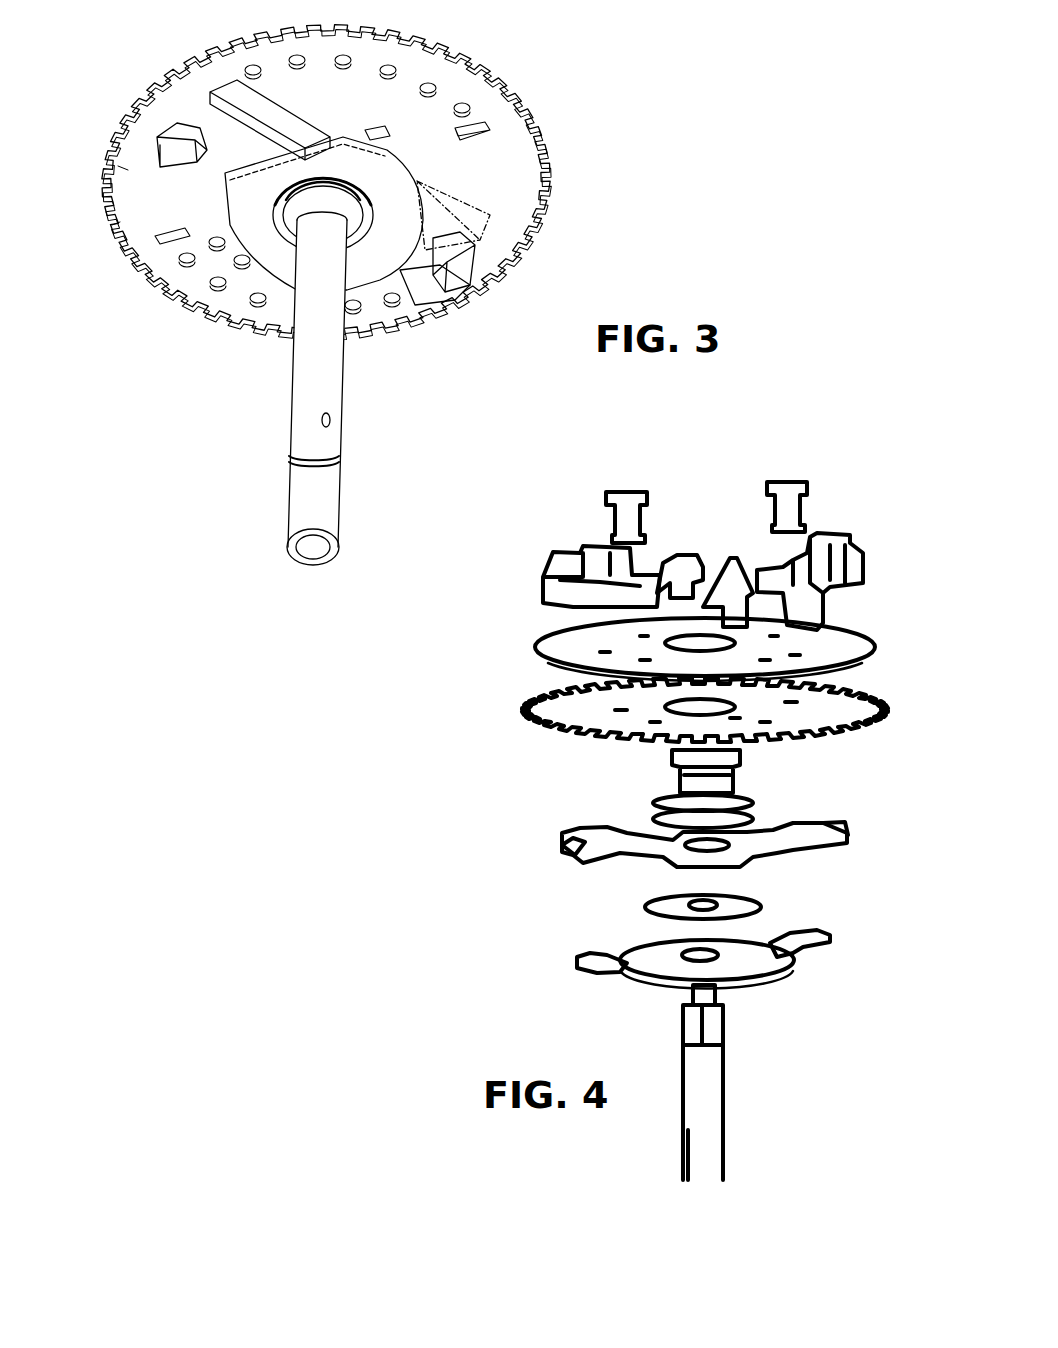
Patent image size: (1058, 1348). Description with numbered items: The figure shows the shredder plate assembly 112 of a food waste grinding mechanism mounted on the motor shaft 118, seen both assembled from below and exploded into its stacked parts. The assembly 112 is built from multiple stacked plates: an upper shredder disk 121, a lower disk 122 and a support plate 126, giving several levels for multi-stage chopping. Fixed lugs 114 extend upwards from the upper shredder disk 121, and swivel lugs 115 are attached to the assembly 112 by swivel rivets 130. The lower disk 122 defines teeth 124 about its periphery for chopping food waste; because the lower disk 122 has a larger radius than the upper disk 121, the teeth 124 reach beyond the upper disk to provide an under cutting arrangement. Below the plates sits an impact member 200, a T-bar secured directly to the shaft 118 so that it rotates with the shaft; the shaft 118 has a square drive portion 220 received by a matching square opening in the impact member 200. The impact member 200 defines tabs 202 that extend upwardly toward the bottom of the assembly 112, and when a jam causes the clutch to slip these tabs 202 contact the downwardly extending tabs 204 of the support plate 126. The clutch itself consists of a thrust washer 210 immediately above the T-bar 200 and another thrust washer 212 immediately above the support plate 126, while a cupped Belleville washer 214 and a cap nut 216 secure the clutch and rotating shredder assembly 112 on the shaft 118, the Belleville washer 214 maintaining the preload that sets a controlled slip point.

In FIG. 3, the shredder plate assembly 112 is at (148, 357).
In FIG. 4, the shredder plate assembly 112 is at (490, 833).
In FIG. 4, the fixed lugs 114 is at (597, 532).
In FIG. 4, the swivel lugs 115 is at (556, 555).
In FIG. 3, the motor shaft 118 is at (302, 386).
In FIG. 4, the motor shaft 118 is at (682, 1071).
In FIG. 4, the upper shredder disk 121 is at (538, 641).
In FIG. 3, the lower disk 122 is at (372, 323).
In FIG. 4, the lower disk 122 is at (832, 718).
In FIG. 3, the teeth 124 is at (125, 242).
In FIG. 4, the teeth 124 is at (555, 725).
In FIG. 3, the support plate 126 is at (487, 213).
In FIG. 4, the support plate 126 is at (772, 860).
In FIG. 4, the swivel rivets 130 is at (614, 495).
In FIG. 3, the impact member 200 is at (230, 200).
In FIG. 4, the impact member 200 is at (660, 985).
In FIG. 3, the tabs 202 is at (217, 125).
In FIG. 4, the tabs 202 is at (575, 955).
In FIG. 3, the downwardly extending tabs 204 is at (190, 127).
In FIG. 4, the downwardly extending tabs 204 is at (826, 830).
In FIG. 4, the thrust washer 210 is at (752, 908).
In FIG. 4, the thrust washer 212 is at (713, 845).
In FIG. 4, the Belleville washer 214 is at (654, 803).
In FIG. 4, the cap nut 216 is at (673, 763).
In FIG. 4, the square drive portion 220 is at (712, 1023).